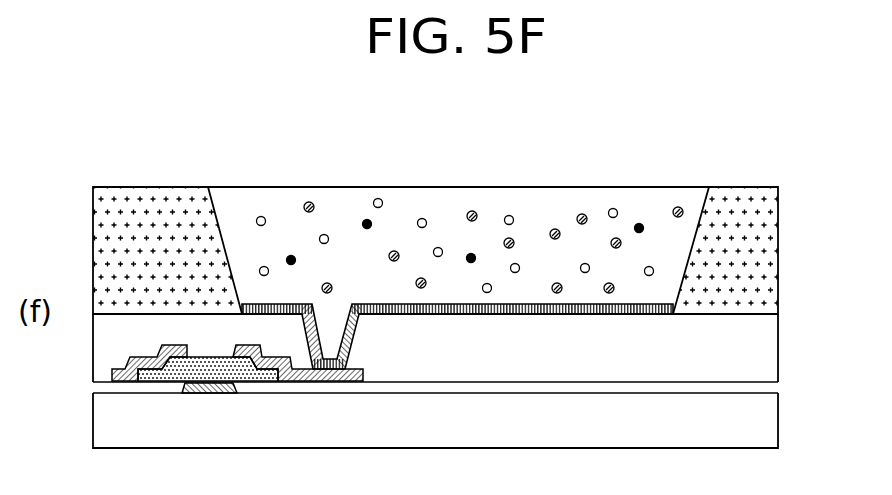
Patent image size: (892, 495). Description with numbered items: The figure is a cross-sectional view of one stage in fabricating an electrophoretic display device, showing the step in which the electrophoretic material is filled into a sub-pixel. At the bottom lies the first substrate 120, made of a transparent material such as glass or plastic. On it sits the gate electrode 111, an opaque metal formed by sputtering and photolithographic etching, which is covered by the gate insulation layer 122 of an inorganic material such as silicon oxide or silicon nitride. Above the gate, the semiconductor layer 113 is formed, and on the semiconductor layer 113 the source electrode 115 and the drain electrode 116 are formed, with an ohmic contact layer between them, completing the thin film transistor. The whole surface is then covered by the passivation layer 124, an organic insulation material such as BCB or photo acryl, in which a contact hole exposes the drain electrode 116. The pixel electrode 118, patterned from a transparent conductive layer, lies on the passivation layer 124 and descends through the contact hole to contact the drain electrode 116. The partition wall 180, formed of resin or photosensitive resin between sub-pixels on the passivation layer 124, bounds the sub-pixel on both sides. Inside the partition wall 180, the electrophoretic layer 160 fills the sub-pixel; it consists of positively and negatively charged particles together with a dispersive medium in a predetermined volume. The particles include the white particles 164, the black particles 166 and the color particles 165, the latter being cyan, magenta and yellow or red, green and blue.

The gate electrode 111 is at (205, 394).
The semiconductor layer 113 is at (158, 382).
The source electrode 115 is at (121, 382).
The drain electrode 116 is at (308, 382).
The pixel electrode 118 is at (633, 304).
The first substrate 120 is at (762, 428).
The gate insulation layer 122 is at (762, 385).
The passivation layer 124 is at (762, 349).
The electrophoretic layer 160 is at (550, 203).
The white particles 164 is at (422, 218).
The color particles 165 is at (308, 201).
The black particles 166 is at (367, 219).
The partition wall 180 is at (762, 236).